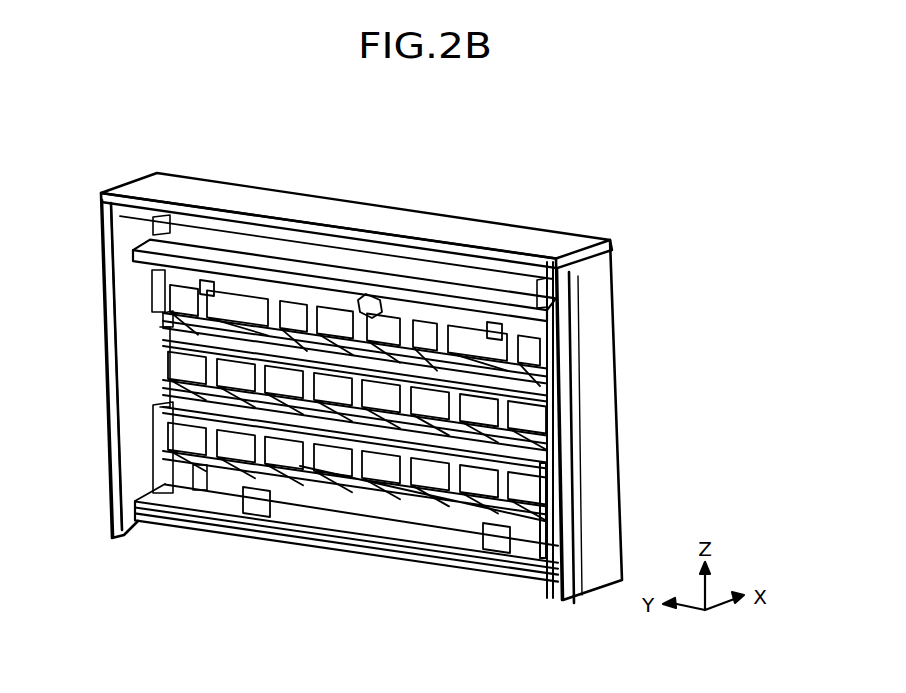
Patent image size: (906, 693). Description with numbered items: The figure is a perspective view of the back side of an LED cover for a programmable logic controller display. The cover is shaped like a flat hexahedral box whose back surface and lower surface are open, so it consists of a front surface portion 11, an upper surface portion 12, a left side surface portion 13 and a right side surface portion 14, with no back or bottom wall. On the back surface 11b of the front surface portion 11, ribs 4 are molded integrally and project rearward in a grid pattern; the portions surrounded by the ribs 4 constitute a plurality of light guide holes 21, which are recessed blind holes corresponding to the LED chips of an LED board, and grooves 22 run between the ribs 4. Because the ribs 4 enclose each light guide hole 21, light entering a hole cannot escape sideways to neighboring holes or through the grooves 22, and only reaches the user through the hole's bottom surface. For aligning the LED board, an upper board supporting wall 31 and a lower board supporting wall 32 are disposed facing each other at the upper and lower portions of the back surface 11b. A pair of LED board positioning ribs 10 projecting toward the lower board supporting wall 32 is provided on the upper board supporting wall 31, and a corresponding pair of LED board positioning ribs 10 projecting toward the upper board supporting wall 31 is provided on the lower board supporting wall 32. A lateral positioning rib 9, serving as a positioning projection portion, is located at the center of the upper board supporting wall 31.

The ribs 4 is at (272, 305).
The lateral positioning rib 9 is at (370, 305).
The LED board positioning ribs 10 is at (206, 284).
The front surface portion 11 is at (350, 203).
The back surface 11b is at (420, 505).
The upper surface portion 12 is at (548, 246).
The left side surface portion 13 is at (598, 433).
The right side surface portion 14 is at (133, 345).
The light guide holes 21 is at (488, 408).
The grooves 22 is at (518, 448).
The upper board supporting wall 31 is at (250, 262).
The lower board supporting wall 32 is at (362, 522).